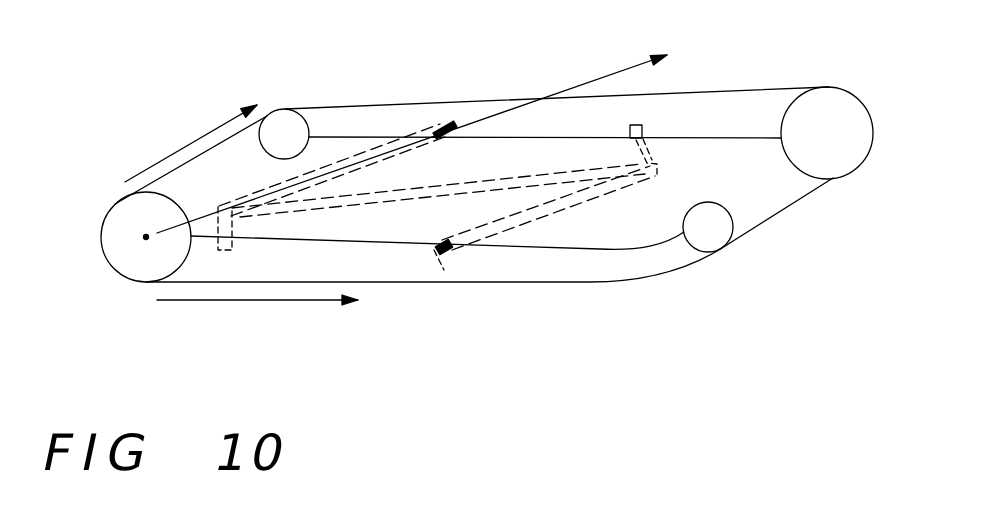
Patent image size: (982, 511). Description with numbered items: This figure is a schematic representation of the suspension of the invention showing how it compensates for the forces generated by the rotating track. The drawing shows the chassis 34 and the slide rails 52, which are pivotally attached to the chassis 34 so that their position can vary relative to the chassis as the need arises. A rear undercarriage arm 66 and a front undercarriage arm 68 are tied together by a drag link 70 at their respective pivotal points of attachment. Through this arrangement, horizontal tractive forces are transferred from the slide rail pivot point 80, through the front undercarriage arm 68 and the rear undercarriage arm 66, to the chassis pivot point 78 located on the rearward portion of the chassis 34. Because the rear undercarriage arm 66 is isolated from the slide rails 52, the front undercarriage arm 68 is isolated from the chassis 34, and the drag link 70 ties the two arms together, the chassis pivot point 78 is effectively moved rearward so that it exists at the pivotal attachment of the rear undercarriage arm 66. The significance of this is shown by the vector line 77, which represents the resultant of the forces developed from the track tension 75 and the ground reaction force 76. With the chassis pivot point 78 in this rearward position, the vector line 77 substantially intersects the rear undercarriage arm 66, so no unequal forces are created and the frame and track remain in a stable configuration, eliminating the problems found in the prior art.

The chassis 34 is at (382, 113).
The slide rails 52 is at (613, 267).
The rear undercarriage arm 66 is at (338, 152).
The front undercarriage arm 68 is at (533, 227).
The drag link 70 is at (376, 205).
The track tension 75 is at (190, 137).
The ground reaction force 76 is at (290, 305).
The vector line 77 is at (593, 72).
The chassis pivot point 78 is at (457, 118).
The slide rail pivot point 80 is at (441, 258).